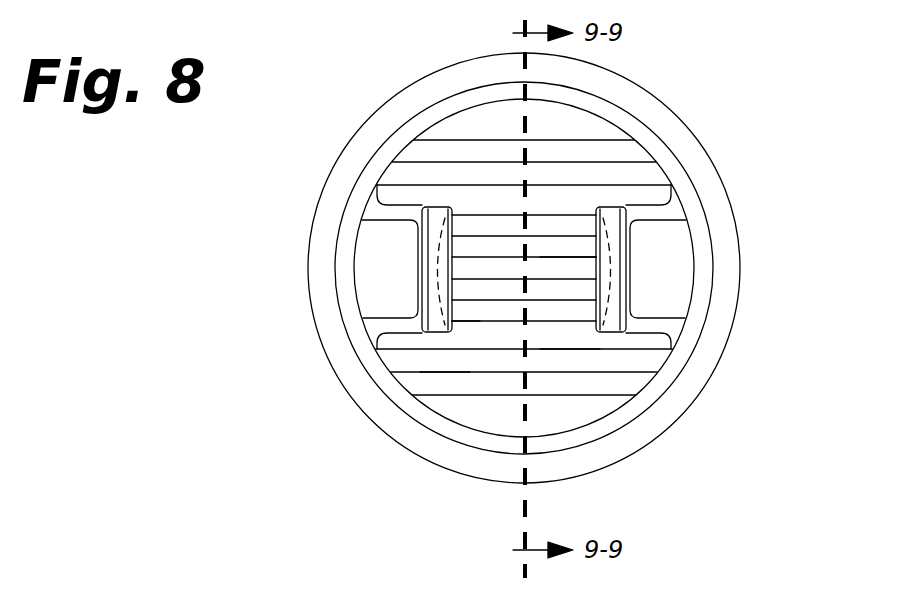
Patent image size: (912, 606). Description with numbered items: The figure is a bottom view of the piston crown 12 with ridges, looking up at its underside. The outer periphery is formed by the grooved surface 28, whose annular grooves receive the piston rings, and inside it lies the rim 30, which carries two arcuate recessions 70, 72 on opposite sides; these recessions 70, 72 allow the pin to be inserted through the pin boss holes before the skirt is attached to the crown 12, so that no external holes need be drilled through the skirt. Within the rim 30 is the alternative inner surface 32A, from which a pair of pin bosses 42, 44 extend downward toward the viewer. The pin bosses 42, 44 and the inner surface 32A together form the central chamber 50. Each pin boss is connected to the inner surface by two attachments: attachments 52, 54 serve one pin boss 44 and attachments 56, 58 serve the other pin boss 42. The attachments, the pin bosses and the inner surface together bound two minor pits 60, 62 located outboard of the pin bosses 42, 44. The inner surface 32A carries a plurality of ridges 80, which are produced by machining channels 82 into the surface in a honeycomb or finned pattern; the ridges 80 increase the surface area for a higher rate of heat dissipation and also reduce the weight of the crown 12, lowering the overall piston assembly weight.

The piston crown 12 is at (560, 247).
The grooved surface 28 is at (405, 90).
The rim 30 is at (667, 138).
The inner surface 32A is at (553, 385).
The pin boss 42 is at (450, 206).
The pin boss 44 is at (592, 206).
The chamber 50 is at (491, 358).
The attachment 52 is at (650, 212).
The attachment 54 is at (665, 323).
The attachment 56 is at (372, 203).
The attachment 58 is at (380, 328).
The minor pit 60 is at (384, 258).
The minor pit 62 is at (647, 256).
The arcuate recession 70 is at (703, 298).
The arcuate recession 72 is at (343, 272).
The ridges 80 is at (458, 373).
The channels 82 is at (560, 335).